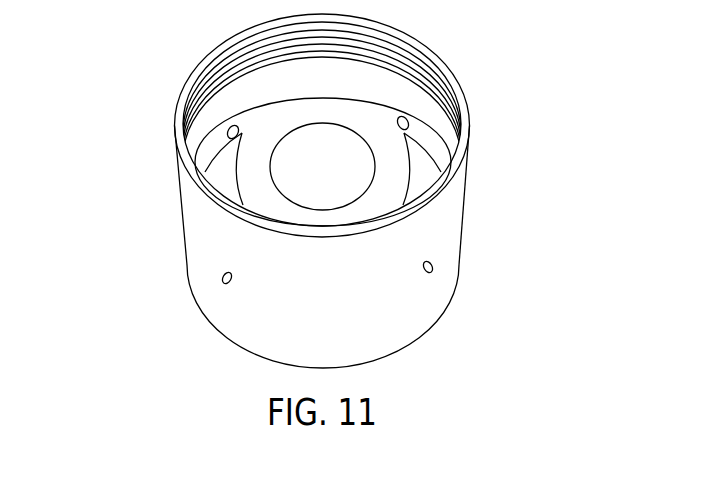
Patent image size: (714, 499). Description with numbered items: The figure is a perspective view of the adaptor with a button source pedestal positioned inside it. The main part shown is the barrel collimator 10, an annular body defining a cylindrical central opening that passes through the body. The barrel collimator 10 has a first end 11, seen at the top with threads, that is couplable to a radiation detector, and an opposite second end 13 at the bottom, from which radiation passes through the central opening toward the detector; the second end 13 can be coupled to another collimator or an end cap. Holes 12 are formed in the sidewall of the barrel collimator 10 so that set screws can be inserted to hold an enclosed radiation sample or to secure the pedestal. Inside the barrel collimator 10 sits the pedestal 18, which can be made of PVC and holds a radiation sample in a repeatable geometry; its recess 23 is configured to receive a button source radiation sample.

The barrel collimator 10 is at (203, 247).
The first end 11 is at (442, 57).
The holes 12 is at (220, 278).
The second end 13 is at (412, 342).
The pedestal 18 is at (252, 183).
The recess 23 is at (332, 152).